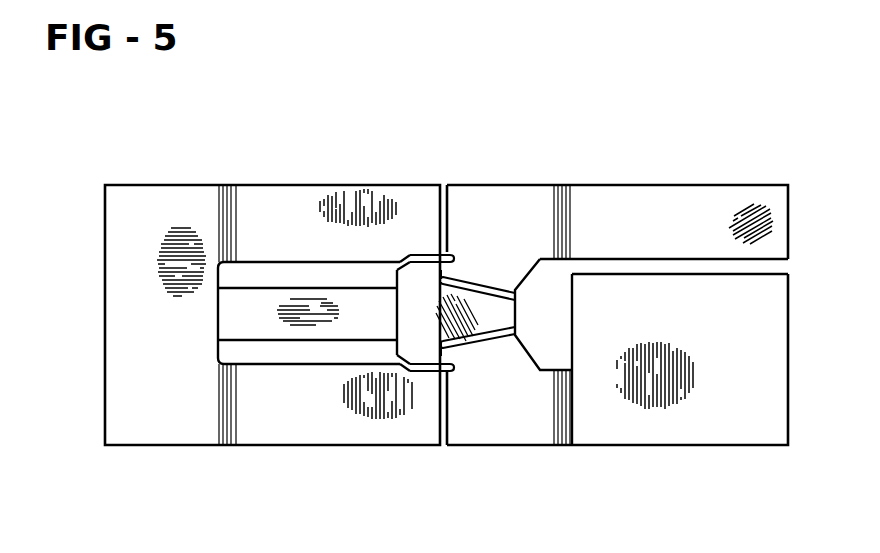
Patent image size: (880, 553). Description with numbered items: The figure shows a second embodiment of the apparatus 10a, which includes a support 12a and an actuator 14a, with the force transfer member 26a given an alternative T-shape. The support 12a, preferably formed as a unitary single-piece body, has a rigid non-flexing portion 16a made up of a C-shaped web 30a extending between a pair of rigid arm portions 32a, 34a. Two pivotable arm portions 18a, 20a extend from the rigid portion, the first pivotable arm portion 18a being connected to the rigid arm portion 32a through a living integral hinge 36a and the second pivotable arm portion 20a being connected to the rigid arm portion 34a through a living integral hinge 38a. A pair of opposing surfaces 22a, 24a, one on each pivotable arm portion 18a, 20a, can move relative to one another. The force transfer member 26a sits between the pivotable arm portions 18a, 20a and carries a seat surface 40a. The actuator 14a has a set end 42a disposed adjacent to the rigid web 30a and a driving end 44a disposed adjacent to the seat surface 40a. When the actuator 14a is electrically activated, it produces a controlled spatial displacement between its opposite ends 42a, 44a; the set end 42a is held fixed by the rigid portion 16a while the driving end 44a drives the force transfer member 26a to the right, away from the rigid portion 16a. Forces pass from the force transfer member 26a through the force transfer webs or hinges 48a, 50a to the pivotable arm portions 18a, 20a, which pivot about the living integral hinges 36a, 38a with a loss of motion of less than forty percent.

The apparatus 10a is at (421, 166).
The support 12a is at (235, 161).
The actuator 14a is at (270, 327).
The rigid non-flexing portion 16a is at (90, 205).
The pivotable arm portion 18a is at (537, 230).
The pivotable arm portion 20a is at (545, 410).
The opposing surface 22a is at (652, 259).
The opposing surface 24a is at (700, 273).
The force transfer member 26a is at (468, 322).
The C-shaped web 30a is at (176, 214).
The rigid arm portion 32a is at (283, 214).
The rigid arm portion 34a is at (318, 424).
The living integral hinge 36a is at (446, 250).
The living integral hinge 38a is at (448, 383).
The seat surface 40a is at (393, 278).
The set end 42a is at (218, 318).
The driving end 44a is at (397, 323).
The force transfer web 48a is at (447, 252).
The force transfer web 50a is at (450, 375).